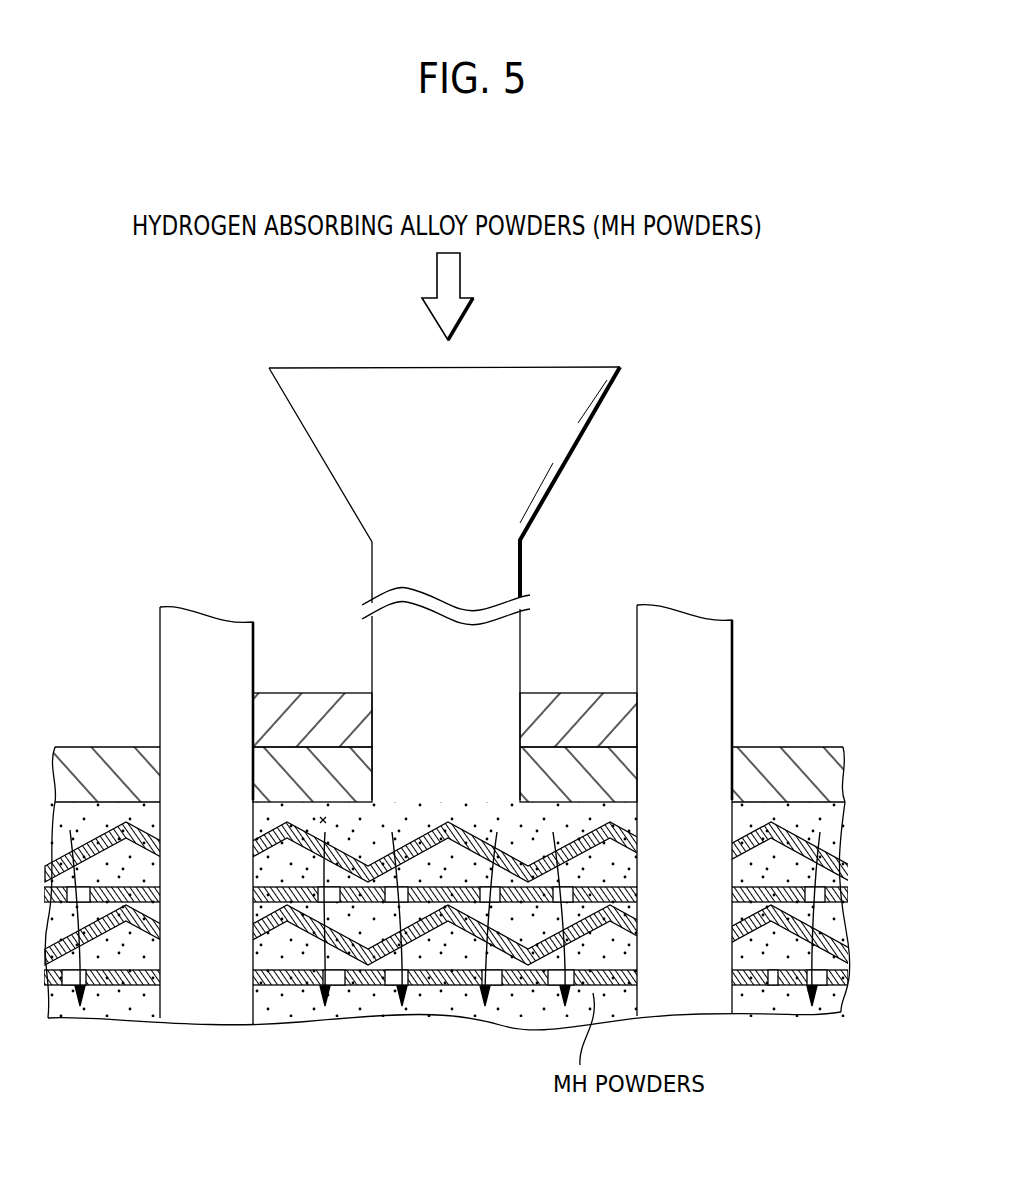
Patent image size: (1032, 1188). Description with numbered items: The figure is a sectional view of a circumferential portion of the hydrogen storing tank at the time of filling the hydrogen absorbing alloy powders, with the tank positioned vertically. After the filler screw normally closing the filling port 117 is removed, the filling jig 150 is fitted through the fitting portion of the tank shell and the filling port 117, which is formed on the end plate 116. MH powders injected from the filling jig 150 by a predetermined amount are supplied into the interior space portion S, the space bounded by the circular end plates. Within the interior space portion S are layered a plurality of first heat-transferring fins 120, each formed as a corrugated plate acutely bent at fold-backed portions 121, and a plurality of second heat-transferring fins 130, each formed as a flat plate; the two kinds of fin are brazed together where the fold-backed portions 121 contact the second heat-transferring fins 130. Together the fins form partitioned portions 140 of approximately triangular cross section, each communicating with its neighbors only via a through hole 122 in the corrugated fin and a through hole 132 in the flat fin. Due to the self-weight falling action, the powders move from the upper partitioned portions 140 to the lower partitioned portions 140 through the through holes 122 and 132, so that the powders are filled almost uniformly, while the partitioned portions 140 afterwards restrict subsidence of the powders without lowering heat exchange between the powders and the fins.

The filling jig 150 is at (557, 442).
The filling port 117 is at (518, 713).
The end plate 116 is at (784, 747).
The interior space portion S is at (323, 818).
The through hole 122 is at (448, 852).
The first heat-transferring fin 120 is at (447, 903).
The second heat-transferring fin 130 is at (446, 894).
The through hole 132 is at (446, 977).
The fold-backed portion 121 is at (448, 935).
The partitioned portion 140 is at (445, 918).